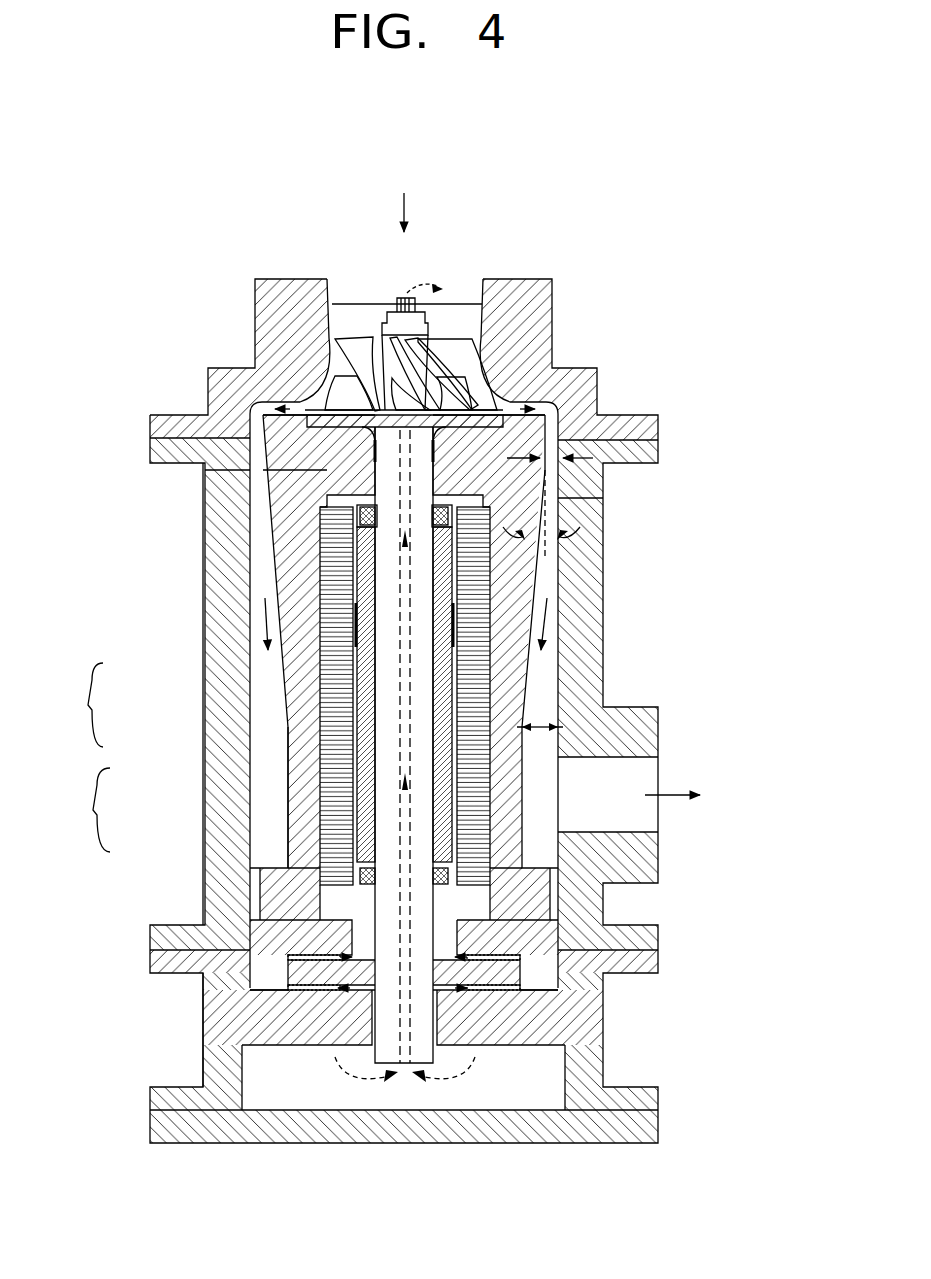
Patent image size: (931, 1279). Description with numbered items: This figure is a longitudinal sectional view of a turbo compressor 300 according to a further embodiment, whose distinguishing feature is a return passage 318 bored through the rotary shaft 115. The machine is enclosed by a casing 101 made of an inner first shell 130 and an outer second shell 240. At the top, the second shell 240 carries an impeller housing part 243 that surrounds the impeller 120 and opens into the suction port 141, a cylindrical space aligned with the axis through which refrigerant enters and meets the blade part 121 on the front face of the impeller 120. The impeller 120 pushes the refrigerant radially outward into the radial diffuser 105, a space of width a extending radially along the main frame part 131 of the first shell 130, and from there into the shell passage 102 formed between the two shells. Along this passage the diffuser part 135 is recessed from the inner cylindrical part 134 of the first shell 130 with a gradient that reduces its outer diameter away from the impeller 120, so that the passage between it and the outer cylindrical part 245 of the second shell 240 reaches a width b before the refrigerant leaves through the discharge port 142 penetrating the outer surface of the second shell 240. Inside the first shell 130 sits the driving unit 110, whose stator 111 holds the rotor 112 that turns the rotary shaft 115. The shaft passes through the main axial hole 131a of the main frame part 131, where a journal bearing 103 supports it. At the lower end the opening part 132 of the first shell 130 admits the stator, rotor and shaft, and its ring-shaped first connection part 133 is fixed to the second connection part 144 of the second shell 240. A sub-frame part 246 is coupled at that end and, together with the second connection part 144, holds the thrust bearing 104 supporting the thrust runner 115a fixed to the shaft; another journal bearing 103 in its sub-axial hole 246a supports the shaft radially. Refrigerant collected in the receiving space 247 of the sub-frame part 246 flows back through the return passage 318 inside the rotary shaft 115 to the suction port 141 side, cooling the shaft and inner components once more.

The turbo compressor 300 is at (172, 253).
The impeller housing part 243 is at (513, 285).
The suction port 141 is at (358, 326).
The blade part 121 is at (452, 348).
The impeller 120 is at (478, 357).
The radial diffuser 105 is at (563, 440).
The passage width a is at (565, 427).
The main frame part 131 is at (337, 445).
The journal bearing 103 is at (205, 471).
The main axial hole 131a is at (482, 498).
The shell passage 102 is at (256, 546).
The diffuser part 135 is at (533, 593).
The outer cylindrical part 245 is at (598, 645).
The inner cylindrical part 134 is at (517, 683).
The channel width b is at (540, 716).
The second shell 240 is at (200, 675).
The casing 101 is at (79, 705).
The first shell 130 is at (285, 740).
The driving unit 110 is at (85, 810).
The stator 111 is at (325, 791).
The rotor 112 is at (365, 822).
The rotary shaft 115 is at (385, 852).
The discharge port 142 is at (631, 819).
The first connection part 133 is at (275, 898).
The opening part 132 is at (466, 907).
The second connection part 144 is at (270, 948).
The thrust bearing 104 is at (527, 992).
The thrust runner 115a is at (318, 975).
The sub-frame part 246 is at (598, 1028).
The sub-axial hole 246a is at (437, 1020).
The receiving space 247 is at (263, 1096).
The return passage 318 is at (404, 1063).